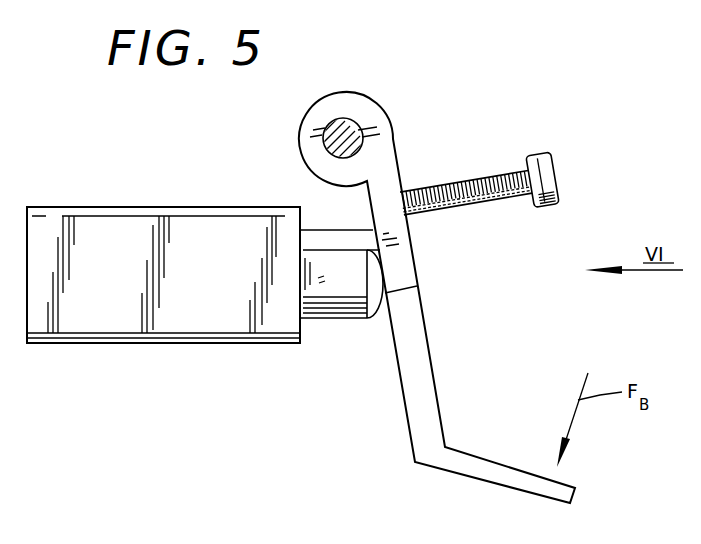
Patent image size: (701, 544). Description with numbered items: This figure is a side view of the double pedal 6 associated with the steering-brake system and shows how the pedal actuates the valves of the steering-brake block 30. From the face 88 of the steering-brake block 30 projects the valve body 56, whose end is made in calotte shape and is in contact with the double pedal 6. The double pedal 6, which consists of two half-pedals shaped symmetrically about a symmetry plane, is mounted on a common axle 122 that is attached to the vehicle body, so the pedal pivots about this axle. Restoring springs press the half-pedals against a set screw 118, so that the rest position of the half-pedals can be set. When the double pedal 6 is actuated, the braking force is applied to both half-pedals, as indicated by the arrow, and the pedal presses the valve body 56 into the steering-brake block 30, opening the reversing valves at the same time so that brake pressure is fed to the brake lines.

The double pedal 6 is at (422, 366).
The steering-brake block 30 is at (113, 320).
The valve body 56 is at (353, 287).
The face 88 is at (302, 333).
The set screw 118 is at (500, 173).
The common axle 122 is at (357, 120).